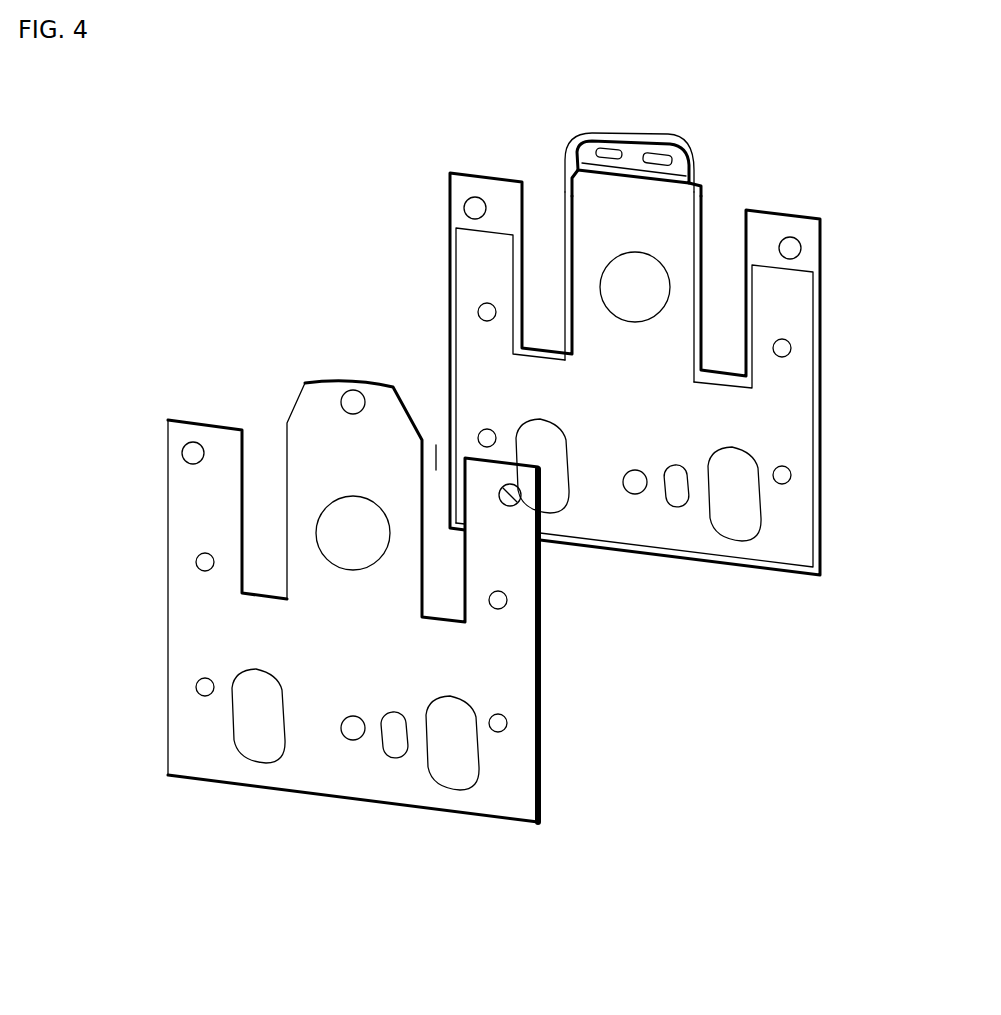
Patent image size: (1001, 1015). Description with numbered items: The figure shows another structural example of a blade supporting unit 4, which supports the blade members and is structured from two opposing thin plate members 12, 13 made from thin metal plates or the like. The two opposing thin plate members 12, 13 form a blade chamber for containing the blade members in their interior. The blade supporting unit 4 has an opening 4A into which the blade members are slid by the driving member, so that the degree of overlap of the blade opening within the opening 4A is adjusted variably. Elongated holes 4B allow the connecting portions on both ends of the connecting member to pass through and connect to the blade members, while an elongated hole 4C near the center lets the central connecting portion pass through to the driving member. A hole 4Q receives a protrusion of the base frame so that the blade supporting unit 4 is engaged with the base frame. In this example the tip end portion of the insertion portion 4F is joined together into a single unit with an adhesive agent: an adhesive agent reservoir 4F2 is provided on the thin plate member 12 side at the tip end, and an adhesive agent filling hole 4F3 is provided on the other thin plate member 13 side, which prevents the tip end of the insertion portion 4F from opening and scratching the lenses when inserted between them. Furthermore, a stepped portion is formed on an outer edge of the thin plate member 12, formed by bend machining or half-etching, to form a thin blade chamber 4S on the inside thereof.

The blade supporting unit 4 is at (744, 714).
The thin plate member 12 is at (820, 303).
The thin plate member 13 is at (540, 677).
The opening 4A is at (630, 312).
The elongated hole 4B is at (538, 512).
The elongated hole 4C is at (680, 495).
The hole 4Q is at (492, 446).
The thin blade chamber 4S is at (790, 413).
The insertion portion 4F is at (706, 233).
The adhesive agent reservoir 4F2 is at (633, 150).
The adhesive agent filling hole 4F3 is at (358, 412).